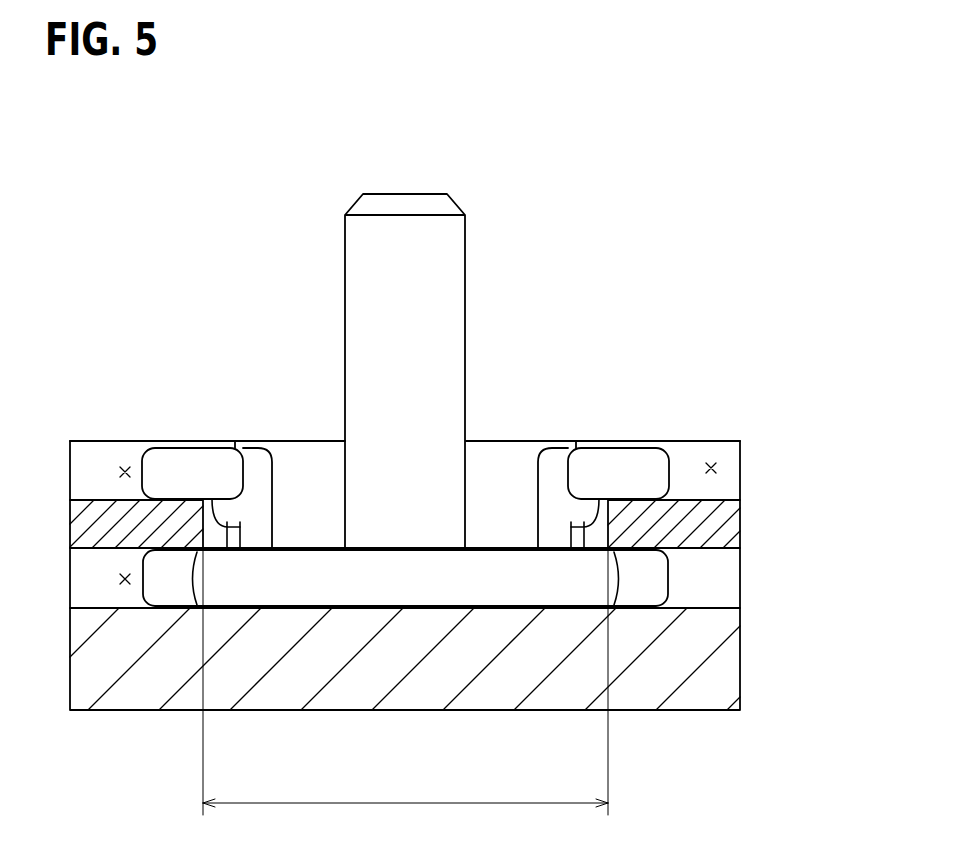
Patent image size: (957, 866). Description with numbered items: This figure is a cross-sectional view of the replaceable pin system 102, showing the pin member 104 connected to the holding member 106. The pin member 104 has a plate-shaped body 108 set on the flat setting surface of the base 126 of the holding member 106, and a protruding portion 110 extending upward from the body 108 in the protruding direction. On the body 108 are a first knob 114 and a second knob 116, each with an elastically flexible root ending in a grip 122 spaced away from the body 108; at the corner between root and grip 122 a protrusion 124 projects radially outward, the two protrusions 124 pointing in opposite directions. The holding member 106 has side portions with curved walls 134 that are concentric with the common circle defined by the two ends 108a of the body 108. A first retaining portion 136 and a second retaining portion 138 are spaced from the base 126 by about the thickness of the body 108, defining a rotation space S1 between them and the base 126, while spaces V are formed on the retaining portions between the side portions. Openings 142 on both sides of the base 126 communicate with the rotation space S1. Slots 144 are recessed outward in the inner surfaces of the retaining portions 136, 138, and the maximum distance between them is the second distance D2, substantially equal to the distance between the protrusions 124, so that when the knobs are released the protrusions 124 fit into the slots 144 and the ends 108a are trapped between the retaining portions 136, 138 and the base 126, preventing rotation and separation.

The replaceable pin system 102 is at (667, 193).
The pin member 104 is at (491, 234).
The holding member 106 is at (676, 426).
The body 108 is at (642, 593).
The ends of the body 108a is at (142, 563).
The protruding portion 110 is at (467, 307).
The first knob 114 is at (253, 443).
The second knob 116 is at (560, 445).
The grip 122 is at (183, 473).
The protrusion 124 is at (590, 508).
The base 126 is at (415, 690).
The curved wall 134 is at (495, 463).
The first retaining portion 136 is at (93, 512).
The second retaining portion 138 is at (675, 513).
The opening 142 is at (70, 606).
The slot 144 is at (220, 548).
The space V is at (126, 468).
The rotation space S1 is at (126, 584).
The second distance D2 is at (405, 681).